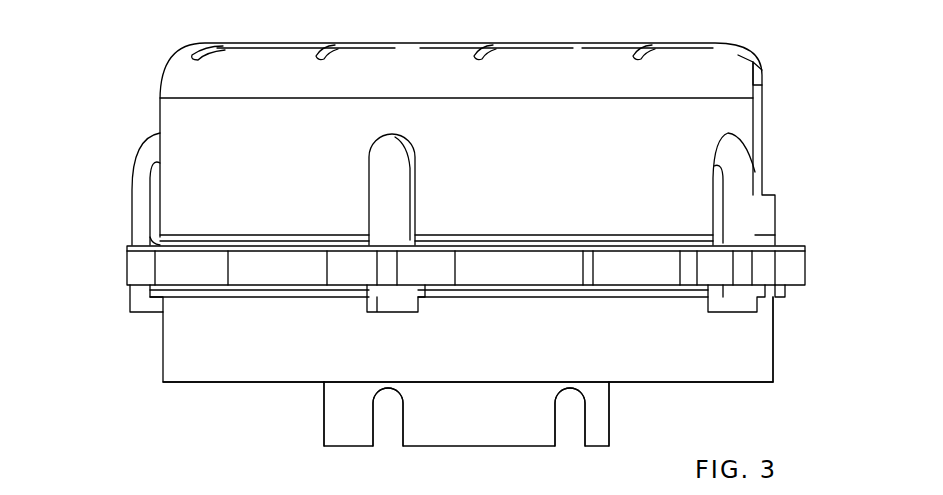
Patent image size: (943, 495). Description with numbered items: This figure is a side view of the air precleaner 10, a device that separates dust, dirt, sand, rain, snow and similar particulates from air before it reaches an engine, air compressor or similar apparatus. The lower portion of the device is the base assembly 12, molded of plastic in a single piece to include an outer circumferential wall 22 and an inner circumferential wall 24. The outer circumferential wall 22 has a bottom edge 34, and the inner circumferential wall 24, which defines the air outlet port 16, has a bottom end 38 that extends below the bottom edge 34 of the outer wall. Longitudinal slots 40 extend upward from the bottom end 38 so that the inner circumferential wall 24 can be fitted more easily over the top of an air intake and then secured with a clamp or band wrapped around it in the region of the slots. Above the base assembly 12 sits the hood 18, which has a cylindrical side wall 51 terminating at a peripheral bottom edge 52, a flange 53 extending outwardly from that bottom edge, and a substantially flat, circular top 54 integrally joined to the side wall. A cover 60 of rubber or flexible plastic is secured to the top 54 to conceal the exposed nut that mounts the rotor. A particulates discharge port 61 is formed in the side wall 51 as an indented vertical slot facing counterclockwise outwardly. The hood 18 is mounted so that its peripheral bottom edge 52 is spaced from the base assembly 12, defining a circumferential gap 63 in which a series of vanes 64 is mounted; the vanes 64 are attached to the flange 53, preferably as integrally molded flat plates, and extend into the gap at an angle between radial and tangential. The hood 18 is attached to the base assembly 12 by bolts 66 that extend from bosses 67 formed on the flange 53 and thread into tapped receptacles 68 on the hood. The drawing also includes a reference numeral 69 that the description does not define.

The air precleaner 10 is at (148, 62).
The base assembly 12 is at (775, 360).
The air outlet port 16 is at (540, 448).
The hood 18 is at (160, 120).
The outer circumferential wall 22 is at (163, 365).
The inner circumferential wall 24 is at (610, 415).
The bottom edge 34 is at (245, 385).
The bottom end 38 is at (340, 448).
The longitudinal slots 40 is at (395, 425).
The cylindrical side wall 51 is at (746, 118).
The peripheral bottom edge 52 is at (248, 235).
The flange 53 is at (790, 245).
The top 54 is at (682, 42).
The cover 60 is at (535, 42).
The particulates discharge port 61 is at (764, 77).
The circumferential gap 63 is at (775, 265).
The vanes 64 is at (143, 272).
The bolts 66 is at (377, 263).
The bosses 67 is at (130, 303).
The tapped receptacles 68 is at (133, 212).
The ring segments 69 is at (442, 277).